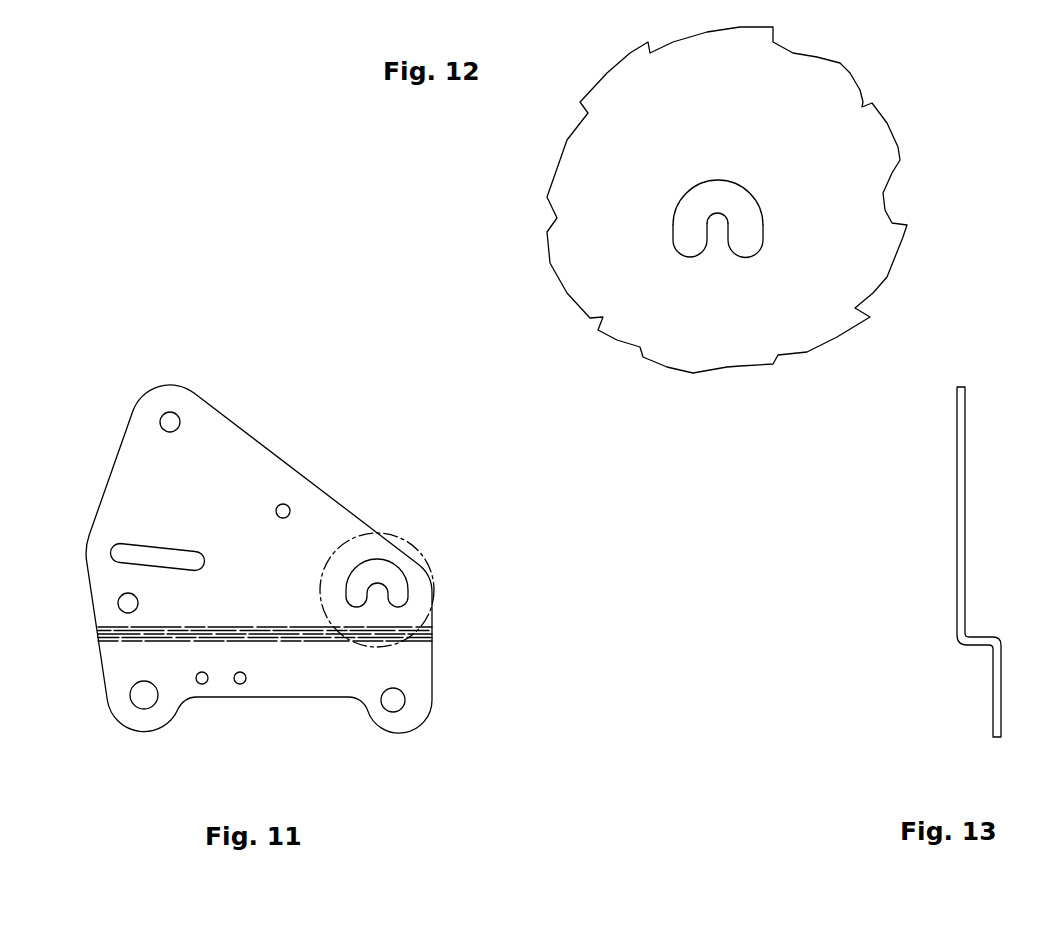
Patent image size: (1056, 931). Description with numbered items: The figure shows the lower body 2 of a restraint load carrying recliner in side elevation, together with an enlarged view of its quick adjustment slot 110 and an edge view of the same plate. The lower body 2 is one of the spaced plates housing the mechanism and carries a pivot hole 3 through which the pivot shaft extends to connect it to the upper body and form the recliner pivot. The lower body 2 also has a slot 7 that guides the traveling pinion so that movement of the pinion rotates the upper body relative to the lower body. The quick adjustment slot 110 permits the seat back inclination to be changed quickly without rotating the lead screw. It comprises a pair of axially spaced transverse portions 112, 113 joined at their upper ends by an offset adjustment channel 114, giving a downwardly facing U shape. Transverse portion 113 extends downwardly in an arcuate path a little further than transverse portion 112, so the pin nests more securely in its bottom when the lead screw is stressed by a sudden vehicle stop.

In FIG. 11, the lower body 2 is at (446, 680).
In FIG. 12, the lower body 2 is at (582, 219).
In FIG. 13, the lower body 2 is at (942, 488).
In FIG. 11, the pivot hole 3 is at (159, 421).
In FIG. 11, the slot 7 is at (113, 555).
In FIG. 11, the quick adjustment slot 110 is at (341, 609).
In FIG. 12, the quick adjustment slot 110 is at (717, 186).
In FIG. 12, the transverse portion 112 is at (672, 224).
In FIG. 12, the transverse portion 113 is at (763, 238).
In FIG. 12, the offset adjustment channel 114 is at (715, 180).